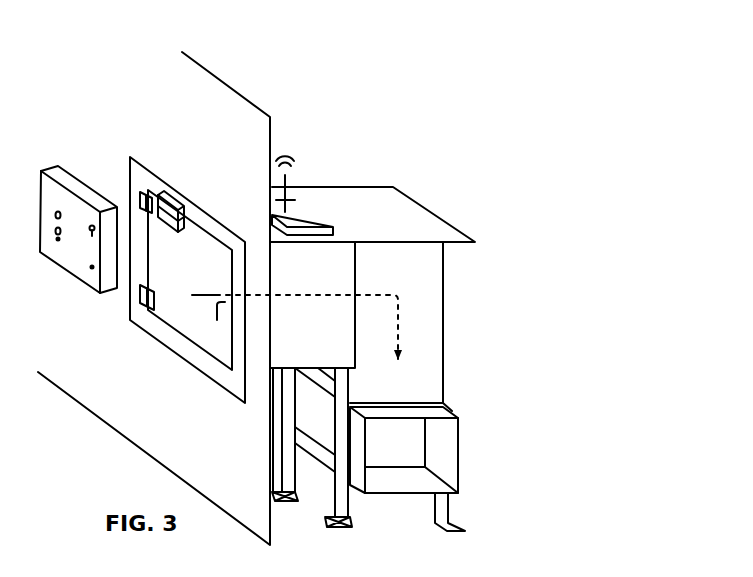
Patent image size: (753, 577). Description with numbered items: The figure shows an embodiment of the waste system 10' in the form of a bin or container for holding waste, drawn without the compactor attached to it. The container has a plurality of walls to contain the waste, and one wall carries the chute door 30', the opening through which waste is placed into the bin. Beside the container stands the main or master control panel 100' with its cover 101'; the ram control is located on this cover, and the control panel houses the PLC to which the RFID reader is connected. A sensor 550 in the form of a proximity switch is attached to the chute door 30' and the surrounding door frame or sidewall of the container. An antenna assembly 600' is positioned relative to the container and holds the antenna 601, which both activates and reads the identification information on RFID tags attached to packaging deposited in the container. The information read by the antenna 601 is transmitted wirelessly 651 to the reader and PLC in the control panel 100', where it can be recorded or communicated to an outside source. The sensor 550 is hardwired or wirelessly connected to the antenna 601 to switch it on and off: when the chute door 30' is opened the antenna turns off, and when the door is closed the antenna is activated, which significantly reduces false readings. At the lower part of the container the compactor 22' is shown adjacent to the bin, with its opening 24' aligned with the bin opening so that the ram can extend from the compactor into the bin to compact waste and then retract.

The system 10' is at (269, 278).
The compactor 22' is at (312, 463).
The opening 24' is at (432, 469).
The chute door 30' is at (187, 280).
The main control panel 100' is at (68, 232).
The cover 101' is at (76, 272).
The sensor 550 is at (155, 188).
The antenna assembly 600' is at (326, 186).
The antenna 601 is at (342, 217).
The wireless transmission 651 is at (297, 150).